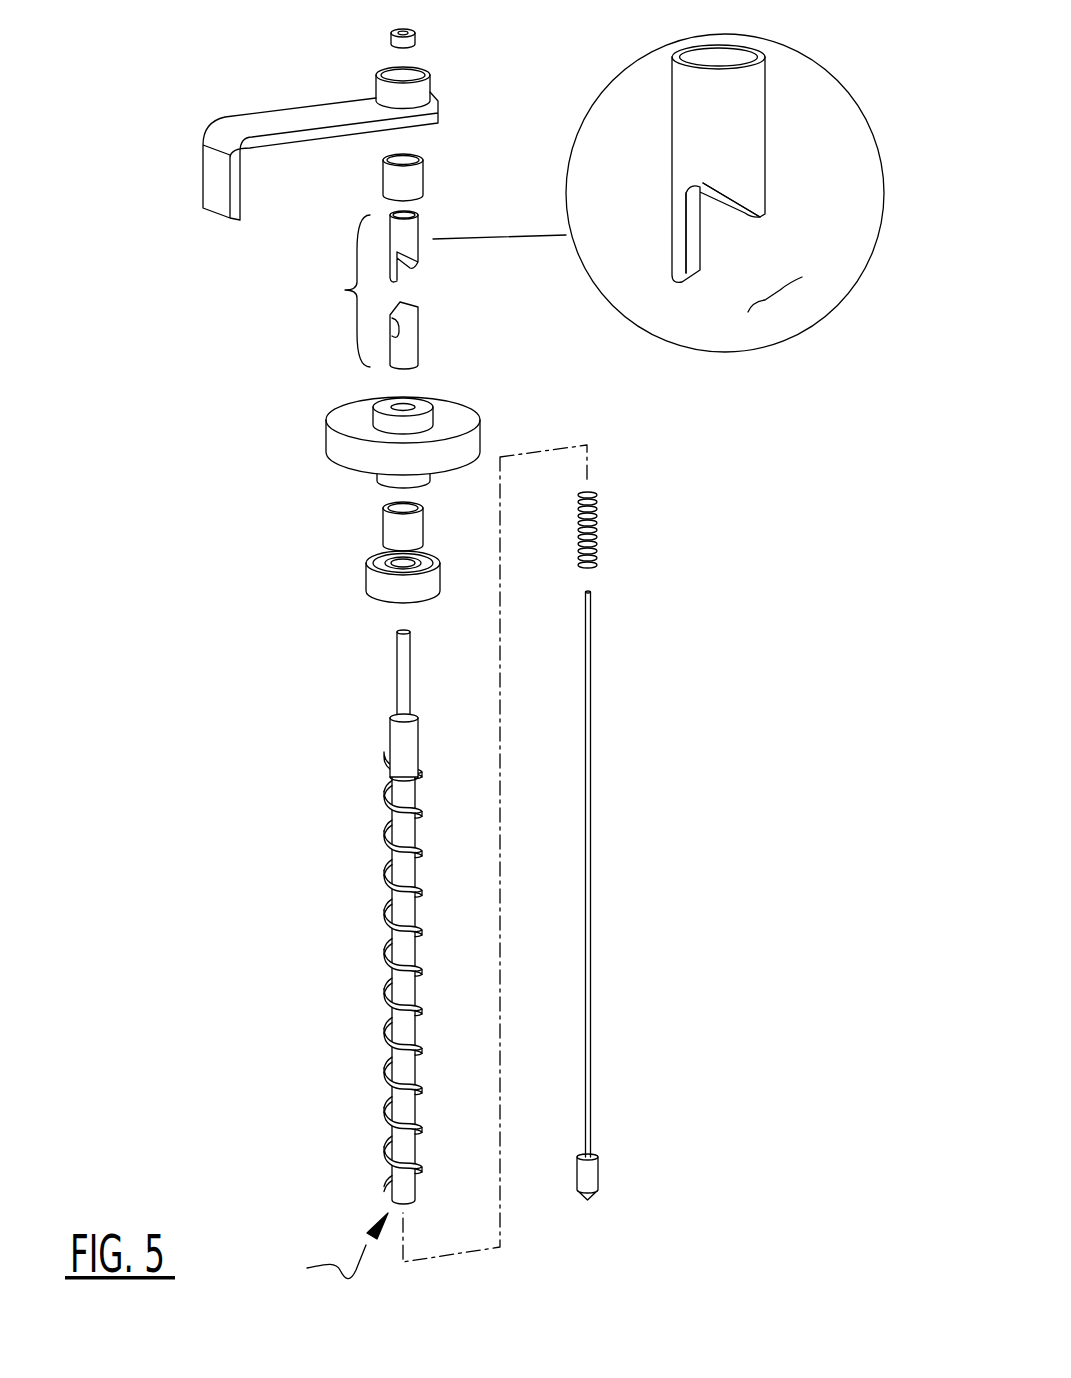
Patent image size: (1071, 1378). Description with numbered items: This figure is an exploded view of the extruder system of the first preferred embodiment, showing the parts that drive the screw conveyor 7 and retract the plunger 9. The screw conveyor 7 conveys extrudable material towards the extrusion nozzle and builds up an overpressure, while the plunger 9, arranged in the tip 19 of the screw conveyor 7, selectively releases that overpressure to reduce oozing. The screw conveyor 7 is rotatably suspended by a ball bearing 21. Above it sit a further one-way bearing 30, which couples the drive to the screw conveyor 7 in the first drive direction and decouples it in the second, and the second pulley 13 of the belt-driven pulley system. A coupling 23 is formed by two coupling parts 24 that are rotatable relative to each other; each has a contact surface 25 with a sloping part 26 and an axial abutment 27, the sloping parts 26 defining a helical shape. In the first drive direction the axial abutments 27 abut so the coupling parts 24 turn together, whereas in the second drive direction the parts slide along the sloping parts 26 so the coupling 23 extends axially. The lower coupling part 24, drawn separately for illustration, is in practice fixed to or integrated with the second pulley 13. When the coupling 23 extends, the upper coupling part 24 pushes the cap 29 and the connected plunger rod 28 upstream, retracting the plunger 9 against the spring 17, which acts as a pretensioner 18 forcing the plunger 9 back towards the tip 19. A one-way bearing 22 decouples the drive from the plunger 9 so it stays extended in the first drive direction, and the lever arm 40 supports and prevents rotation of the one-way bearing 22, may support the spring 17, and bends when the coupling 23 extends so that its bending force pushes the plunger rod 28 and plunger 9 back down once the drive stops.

The lever arm 40 is at (282, 118).
The cap 29 is at (417, 42).
The one-way bearing 22 is at (392, 178).
The coupling 23 is at (337, 291).
The coupling part 24 is at (403, 233).
The contact surface 25 is at (776, 306).
The sloping part 26 is at (748, 212).
The axial abutment 27 is at (687, 220).
The second pulley 13 is at (450, 420).
The further one-way bearing 30 is at (397, 525).
The ball bearing 21 is at (387, 578).
The screw conveyor 7 is at (390, 1000).
The spring 17 is at (661, 530).
The pretensioner 18 is at (595, 530).
The plunger rod 28 is at (593, 832).
The plunger 9 is at (590, 1178).
The tip 19 is at (334, 1249).